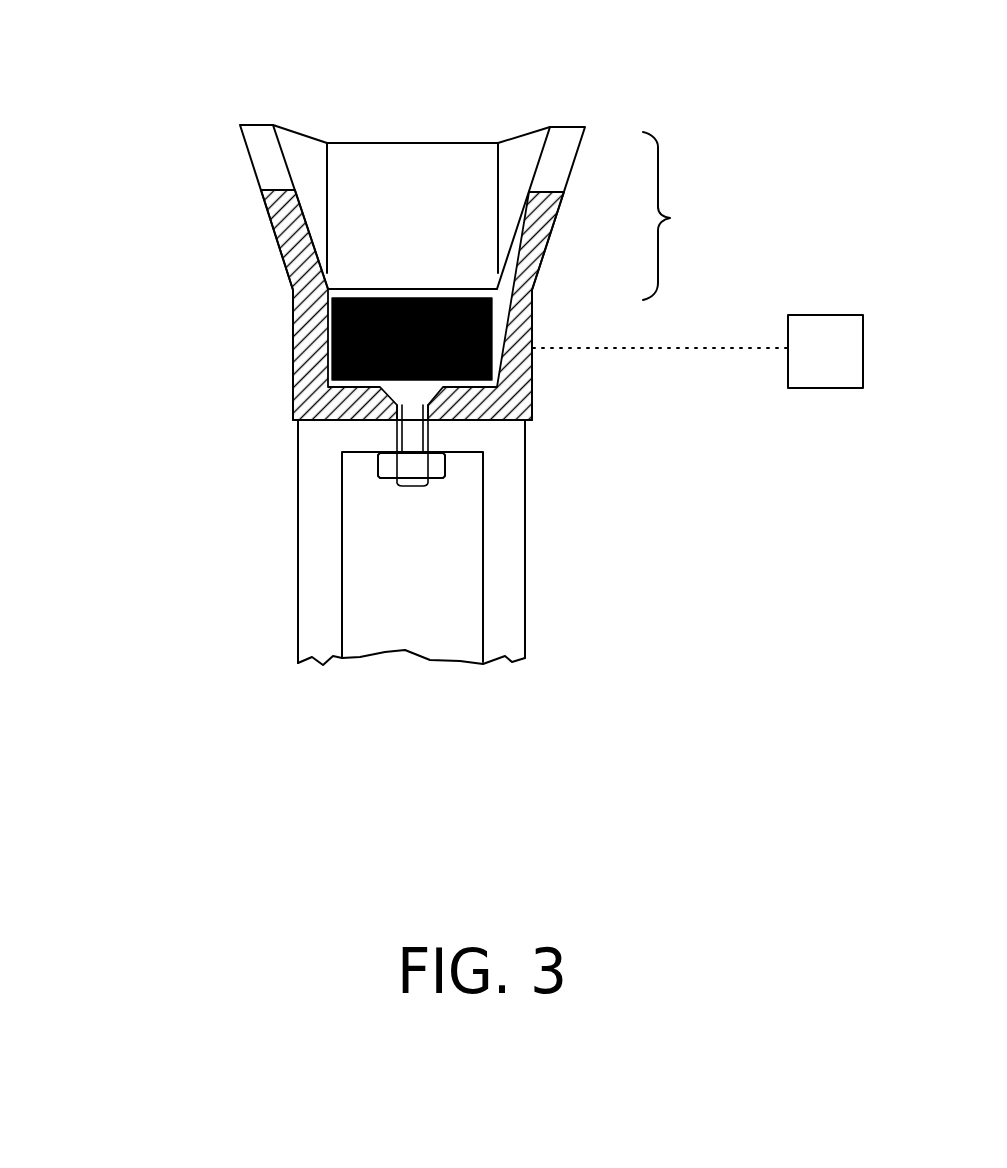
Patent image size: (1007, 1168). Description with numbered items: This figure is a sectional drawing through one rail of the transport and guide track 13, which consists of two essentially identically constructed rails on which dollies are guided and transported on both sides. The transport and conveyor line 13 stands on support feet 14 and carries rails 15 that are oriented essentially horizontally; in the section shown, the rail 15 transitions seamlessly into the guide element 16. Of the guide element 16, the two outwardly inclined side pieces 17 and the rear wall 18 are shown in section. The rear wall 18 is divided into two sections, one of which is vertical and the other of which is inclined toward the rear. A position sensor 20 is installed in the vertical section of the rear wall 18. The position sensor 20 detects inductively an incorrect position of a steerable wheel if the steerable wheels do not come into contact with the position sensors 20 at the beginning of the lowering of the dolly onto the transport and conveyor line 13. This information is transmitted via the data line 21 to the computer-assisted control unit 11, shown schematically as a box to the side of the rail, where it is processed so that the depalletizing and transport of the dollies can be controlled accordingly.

The computer-assisted evaluation unit 11 is at (830, 343).
The transport and guide track 13 is at (157, 181).
The support feet 14 is at (510, 548).
The rail 15 is at (303, 350).
The guide element 16 is at (670, 218).
The outwardly inclined side pieces 17 is at (298, 147).
The rear wall 18 is at (410, 160).
The position sensor 20 is at (493, 387).
The data line 21 is at (713, 350).